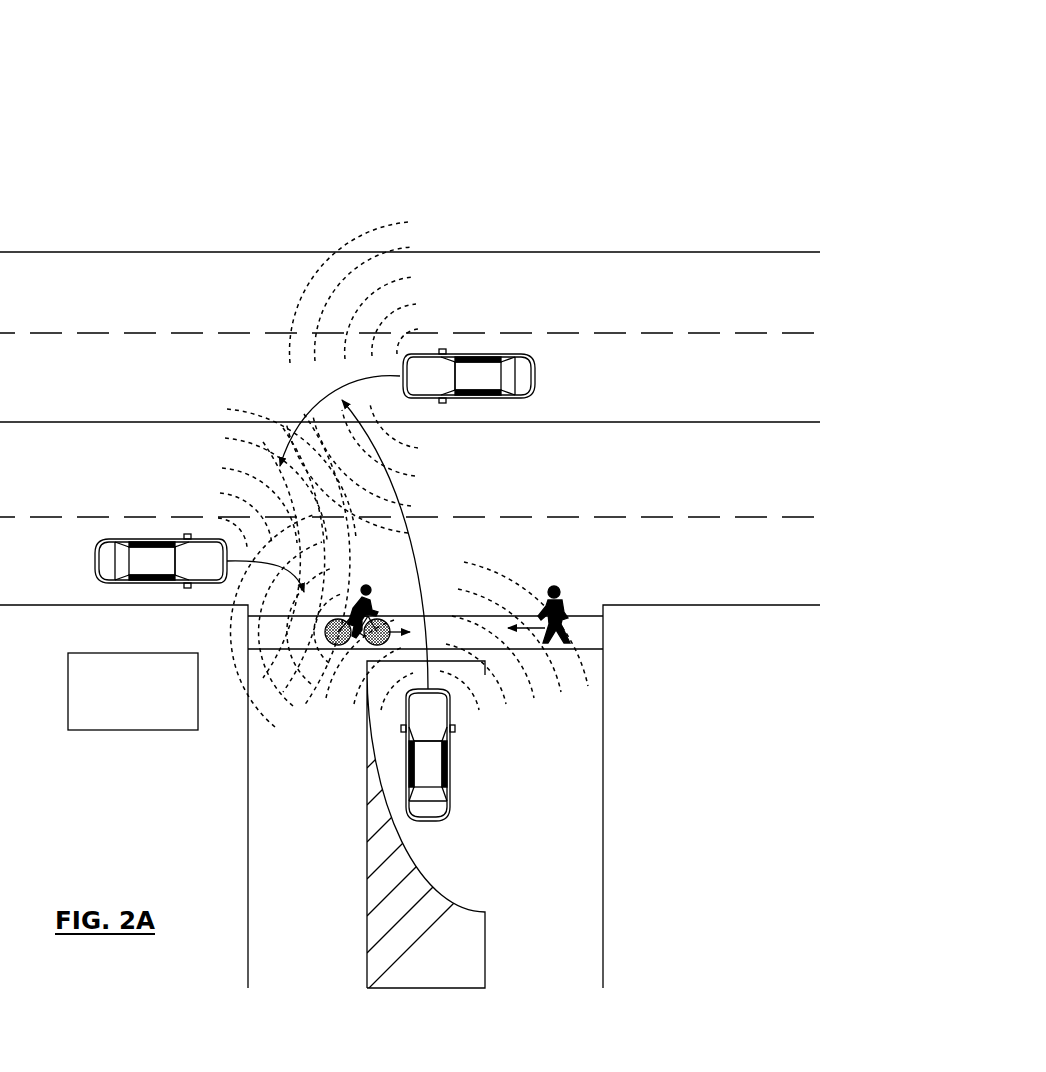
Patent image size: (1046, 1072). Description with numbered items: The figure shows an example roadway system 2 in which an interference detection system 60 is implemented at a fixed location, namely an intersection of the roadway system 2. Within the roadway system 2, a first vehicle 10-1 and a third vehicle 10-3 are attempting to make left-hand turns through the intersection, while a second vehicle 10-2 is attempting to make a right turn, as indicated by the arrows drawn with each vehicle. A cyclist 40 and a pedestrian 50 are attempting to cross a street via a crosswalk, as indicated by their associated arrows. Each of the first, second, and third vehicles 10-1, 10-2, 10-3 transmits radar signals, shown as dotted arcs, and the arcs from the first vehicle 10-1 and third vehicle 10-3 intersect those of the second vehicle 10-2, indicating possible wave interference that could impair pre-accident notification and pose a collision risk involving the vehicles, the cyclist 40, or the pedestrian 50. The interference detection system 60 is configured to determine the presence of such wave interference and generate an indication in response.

The roadway system 2 is at (122, 58).
The first vehicle 10-1 is at (535, 375).
The second vehicle 10-2 is at (95, 560).
The third vehicle 10-3 is at (430, 821).
The cyclist 40 is at (368, 590).
The pedestrian 50 is at (556, 585).
The interference detection system 60 is at (110, 730).